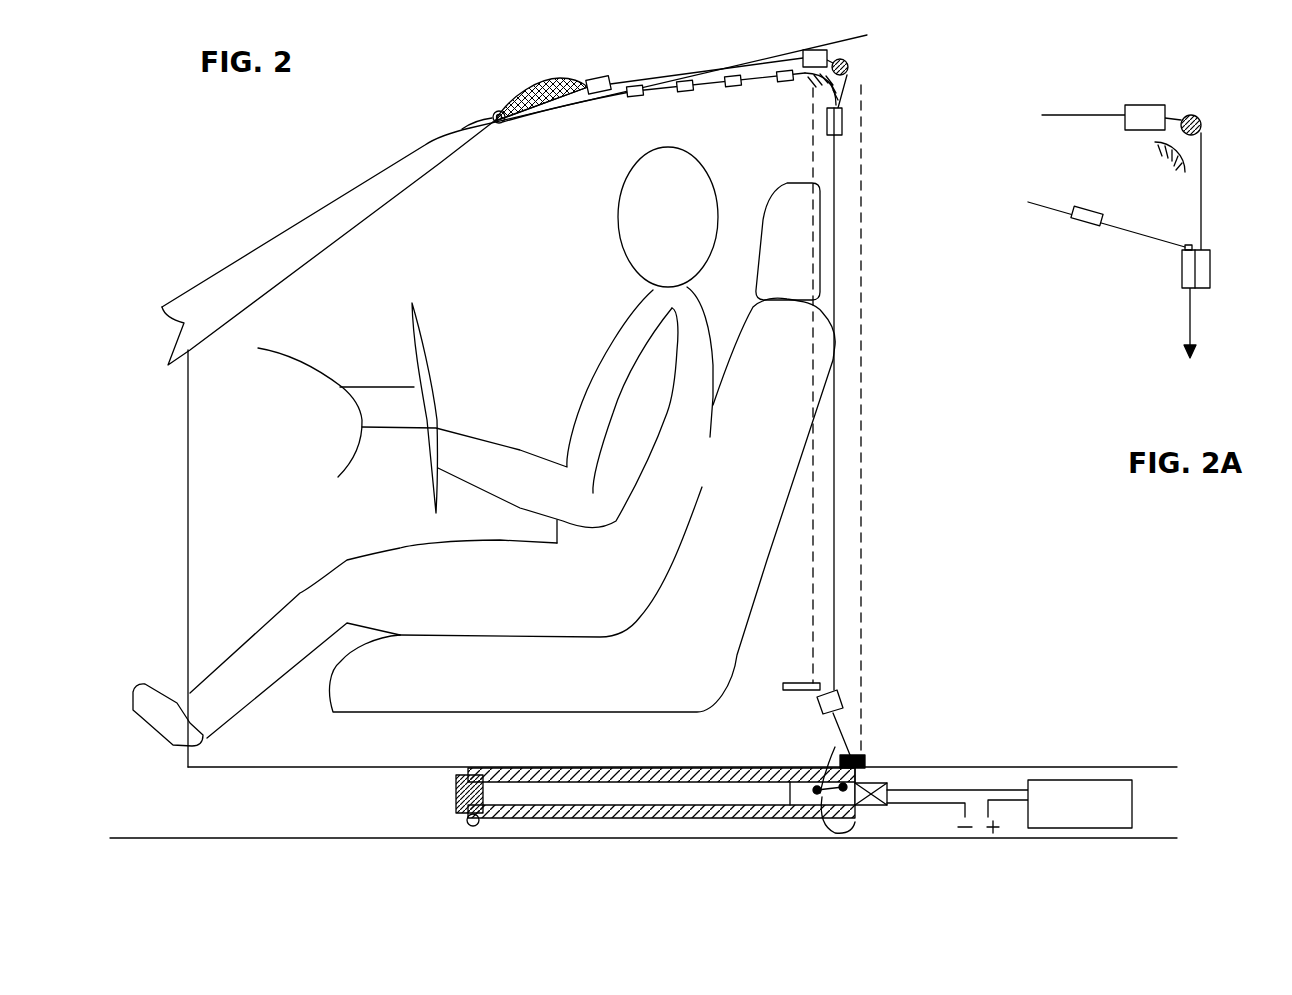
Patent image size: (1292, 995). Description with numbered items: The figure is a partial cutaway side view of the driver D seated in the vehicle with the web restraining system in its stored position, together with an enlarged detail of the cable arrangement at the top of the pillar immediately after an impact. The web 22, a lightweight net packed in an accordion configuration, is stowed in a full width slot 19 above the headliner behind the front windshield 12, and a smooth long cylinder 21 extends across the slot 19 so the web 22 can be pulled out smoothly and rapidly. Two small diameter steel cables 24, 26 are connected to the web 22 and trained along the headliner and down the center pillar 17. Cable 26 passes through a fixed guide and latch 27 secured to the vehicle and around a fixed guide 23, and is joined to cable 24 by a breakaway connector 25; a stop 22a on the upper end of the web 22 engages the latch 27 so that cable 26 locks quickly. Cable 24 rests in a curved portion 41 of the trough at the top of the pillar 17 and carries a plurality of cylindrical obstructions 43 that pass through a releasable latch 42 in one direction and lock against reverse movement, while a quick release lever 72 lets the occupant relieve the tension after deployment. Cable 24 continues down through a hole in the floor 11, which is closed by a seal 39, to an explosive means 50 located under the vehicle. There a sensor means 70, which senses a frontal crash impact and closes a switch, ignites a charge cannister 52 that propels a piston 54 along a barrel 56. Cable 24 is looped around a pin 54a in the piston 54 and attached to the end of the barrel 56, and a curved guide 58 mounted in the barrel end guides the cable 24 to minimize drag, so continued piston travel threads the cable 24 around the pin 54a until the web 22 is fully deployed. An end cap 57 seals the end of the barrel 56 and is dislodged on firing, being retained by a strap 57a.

In FIG. 2, the floor 11 is at (322, 763).
In FIG. 2, the front windshield 12 is at (297, 222).
In FIG. 2, the center pillar 17 is at (864, 318).
In FIG. 2, the slot 19 is at (500, 124).
In FIG. 2, the cylinder 21 is at (494, 112).
In FIG. 2, the web 22 is at (540, 78).
In FIG. 2, the stop 22a is at (587, 78).
In FIG. 2, the fixed guide 23 is at (851, 70).
In FIG. 2A, the fixed guide 23 is at (1204, 122).
In FIG. 2, the cable 24 is at (594, 101).
In FIG. 2A, the cable 24 is at (1052, 182).
In FIG. 2, the breakaway connector 25 is at (845, 120).
In FIG. 2A, the breakaway connector 25 is at (1212, 266).
In FIG. 2, the cable 26 is at (667, 72).
In FIG. 2A, the cable 26 is at (1072, 113).
In FIG. 2, the fixed guide and latch 27 is at (830, 50).
In FIG. 2A, the fixed guide and latch 27 is at (1143, 105).
In FIG. 2, the seal 39 is at (860, 755).
In FIG. 2, the curved portion 41 is at (805, 80).
In FIG. 2A, the curved portion 41 is at (1158, 168).
In FIG. 2, the releasable latch 42 is at (818, 705).
In FIG. 2, the cylindrical obstructions 43 is at (787, 82).
In FIG. 2A, the cylindrical obstructions 43 is at (1084, 226).
In FIG. 2, the explosive means 50 is at (595, 757).
In FIG. 2, the charge cannister 52 is at (885, 783).
In FIG. 2, the piston 54 is at (803, 797).
In FIG. 2, the pin 54a is at (822, 800).
In FIG. 2, the barrel 56 is at (661, 755).
In FIG. 2, the end cap 57 is at (457, 790).
In FIG. 2, the strap 57a is at (462, 826).
In FIG. 2, the curved guide 58 is at (836, 760).
In FIG. 2, the sensor means 70 is at (1095, 780).
In FIG. 2, the quick release lever 72 is at (801, 682).
In FIG. 2, the driver D is at (598, 345).